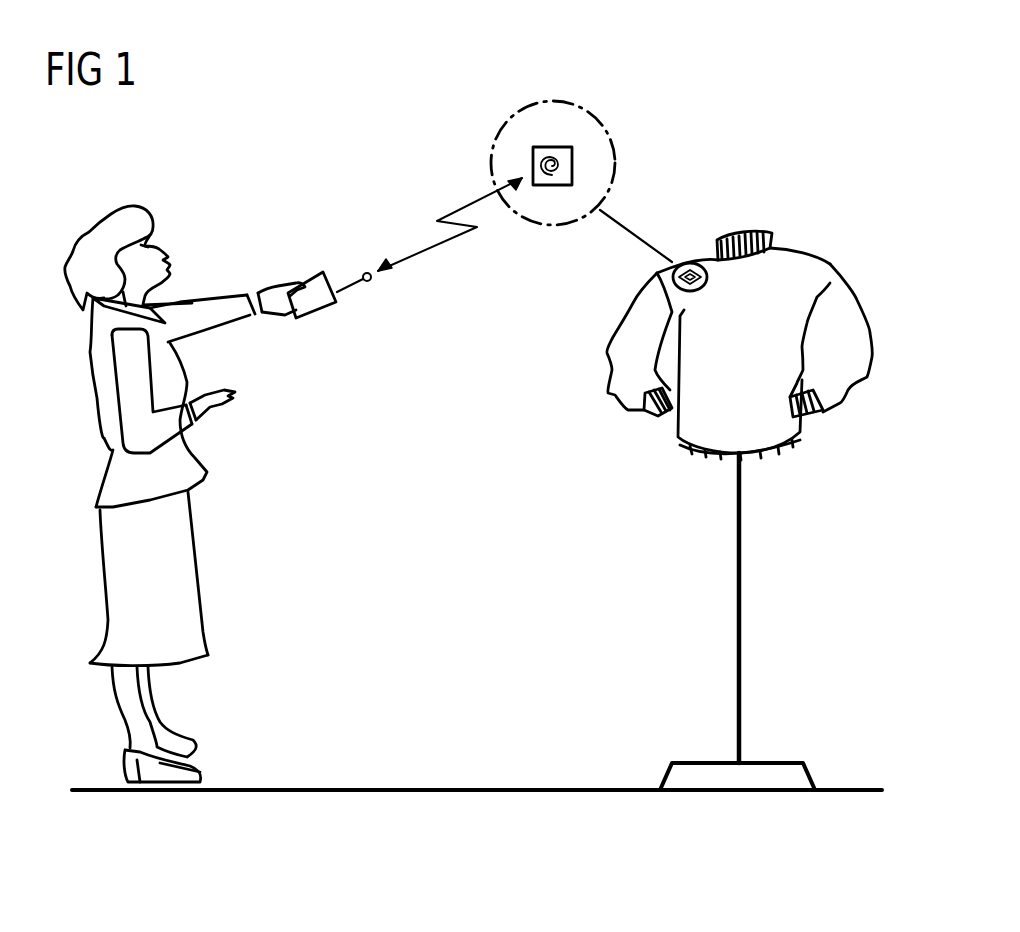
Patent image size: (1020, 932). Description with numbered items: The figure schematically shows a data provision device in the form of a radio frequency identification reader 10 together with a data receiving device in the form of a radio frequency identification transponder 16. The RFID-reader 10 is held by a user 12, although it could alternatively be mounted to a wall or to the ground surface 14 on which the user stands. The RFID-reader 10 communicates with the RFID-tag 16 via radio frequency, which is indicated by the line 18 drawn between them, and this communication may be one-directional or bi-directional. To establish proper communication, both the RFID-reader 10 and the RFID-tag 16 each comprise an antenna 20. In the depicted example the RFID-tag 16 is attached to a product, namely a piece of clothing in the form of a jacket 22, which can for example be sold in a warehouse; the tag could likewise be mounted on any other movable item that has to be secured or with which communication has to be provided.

The radio frequency identification reader 10 is at (310, 320).
The user 12 is at (101, 421).
The ground surface 14 is at (414, 787).
The radio frequency identification transponder 16 is at (572, 153).
The line 18 is at (406, 259).
The antenna 20 is at (358, 290).
The jacket 22 is at (808, 265).